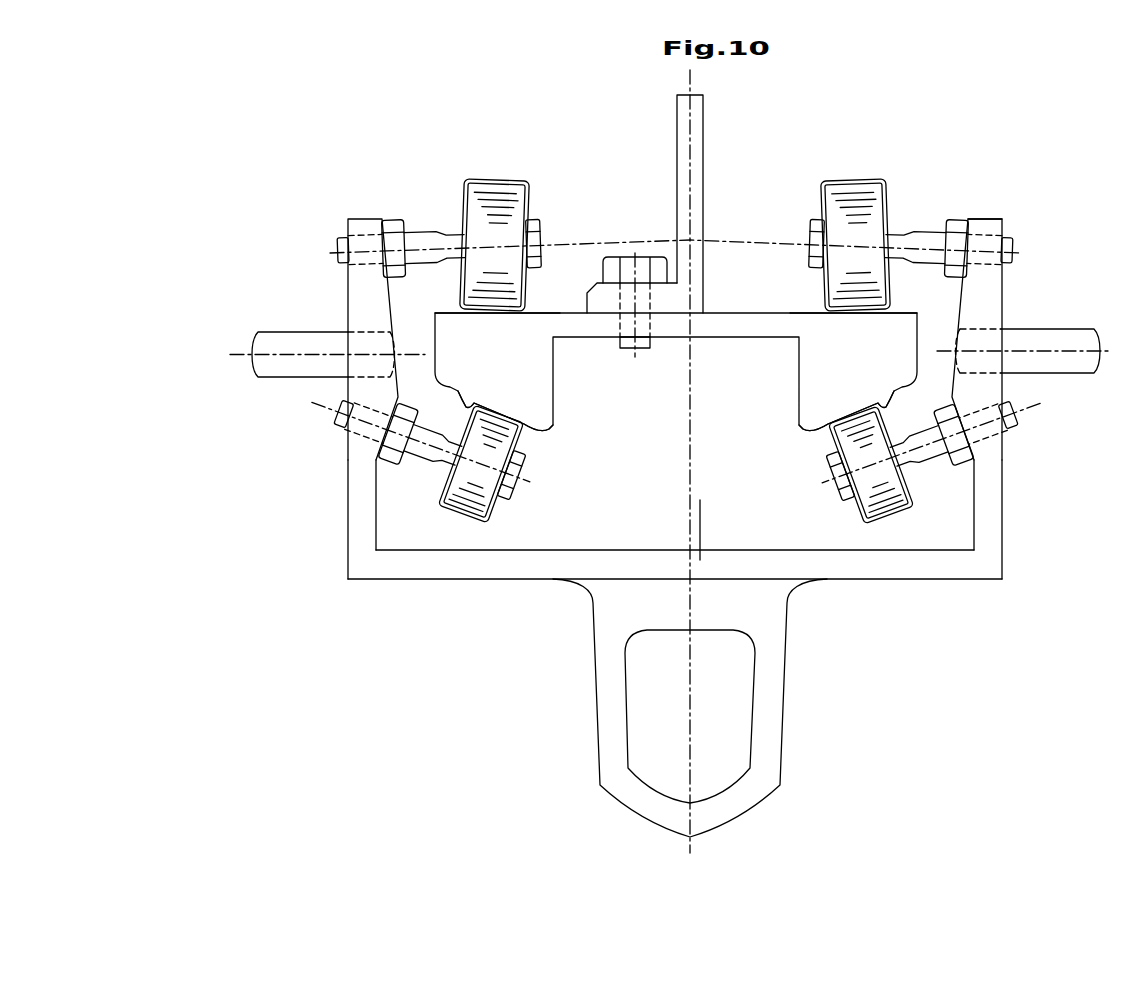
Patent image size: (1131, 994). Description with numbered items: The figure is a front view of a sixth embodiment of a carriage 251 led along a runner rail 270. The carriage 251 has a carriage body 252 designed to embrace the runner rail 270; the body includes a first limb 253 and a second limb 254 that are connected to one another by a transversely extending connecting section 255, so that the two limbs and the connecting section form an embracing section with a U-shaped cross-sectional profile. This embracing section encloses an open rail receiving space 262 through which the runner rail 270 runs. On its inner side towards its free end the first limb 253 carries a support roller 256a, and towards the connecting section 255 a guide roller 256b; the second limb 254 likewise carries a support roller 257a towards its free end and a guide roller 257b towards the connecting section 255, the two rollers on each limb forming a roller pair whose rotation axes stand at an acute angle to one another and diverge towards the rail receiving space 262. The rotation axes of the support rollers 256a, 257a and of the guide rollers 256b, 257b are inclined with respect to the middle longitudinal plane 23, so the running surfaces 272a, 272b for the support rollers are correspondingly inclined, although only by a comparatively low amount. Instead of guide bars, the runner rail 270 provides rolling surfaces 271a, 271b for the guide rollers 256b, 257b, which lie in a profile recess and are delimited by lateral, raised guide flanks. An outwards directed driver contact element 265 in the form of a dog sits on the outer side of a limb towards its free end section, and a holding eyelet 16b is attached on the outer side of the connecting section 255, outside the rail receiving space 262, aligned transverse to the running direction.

The carriage 251 is at (987, 218).
The carriage body 252 is at (361, 556).
The first limb 253 is at (365, 298).
The second limb 254 is at (983, 293).
The connecting section 255 is at (485, 564).
The support roller 256a is at (485, 193).
The guide roller 256b is at (483, 508).
The support roller 257a is at (865, 212).
The guide roller 257b is at (873, 507).
The rail receiving space 262 is at (727, 505).
The driver contact element 265 is at (300, 365).
The runner rail 270 is at (797, 353).
The rolling surface 271a is at (477, 398).
The rolling surface 271b is at (874, 402).
The running surface 272a is at (538, 311).
The running surface 272b is at (818, 311).
The middle longitudinal plane 23 is at (690, 604).
The holding eyelet 16b is at (770, 712).